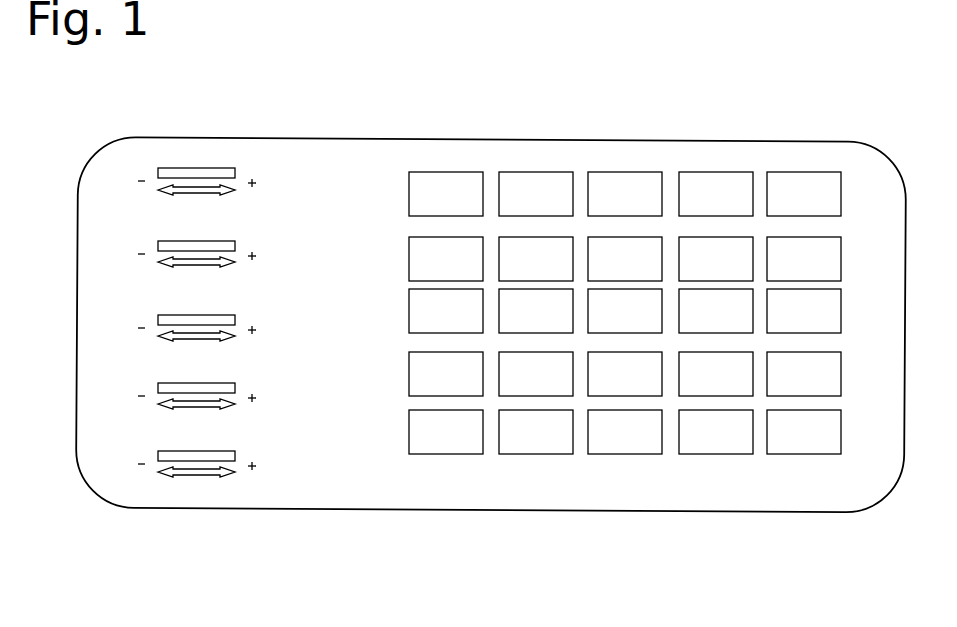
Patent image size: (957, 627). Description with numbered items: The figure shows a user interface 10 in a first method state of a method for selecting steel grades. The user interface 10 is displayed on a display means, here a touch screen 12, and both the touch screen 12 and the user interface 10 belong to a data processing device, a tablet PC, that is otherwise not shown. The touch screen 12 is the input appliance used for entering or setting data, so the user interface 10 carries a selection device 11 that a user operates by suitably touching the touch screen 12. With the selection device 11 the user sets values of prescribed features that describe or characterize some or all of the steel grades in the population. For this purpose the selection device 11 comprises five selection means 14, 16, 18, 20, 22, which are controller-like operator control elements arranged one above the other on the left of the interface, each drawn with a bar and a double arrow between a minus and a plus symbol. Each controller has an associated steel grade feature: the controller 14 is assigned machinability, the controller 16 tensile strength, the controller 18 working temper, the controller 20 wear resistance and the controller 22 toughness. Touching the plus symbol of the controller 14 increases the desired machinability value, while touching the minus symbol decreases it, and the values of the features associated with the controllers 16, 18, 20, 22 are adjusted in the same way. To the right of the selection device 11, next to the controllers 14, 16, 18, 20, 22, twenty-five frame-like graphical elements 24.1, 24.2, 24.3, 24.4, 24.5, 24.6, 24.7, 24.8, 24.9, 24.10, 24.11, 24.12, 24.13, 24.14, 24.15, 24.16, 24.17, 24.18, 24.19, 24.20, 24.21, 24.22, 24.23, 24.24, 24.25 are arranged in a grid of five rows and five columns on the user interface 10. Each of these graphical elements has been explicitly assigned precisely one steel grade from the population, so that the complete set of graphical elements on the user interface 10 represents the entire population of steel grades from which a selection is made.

The user interface 10 is at (280, 522).
The selection device 11 is at (226, 154).
The touch screen 12 is at (402, 527).
The selection means 14 is at (239, 128).
The selection means 16 is at (237, 262).
The selection means 18 is at (237, 336).
The selection means 20 is at (237, 404).
The selection means 22 is at (237, 472).
The graphical element 24.1 is at (469, 206).
The graphical element 24.2 is at (559, 206).
The graphical element 24.3 is at (648, 206).
The graphical element 24.4 is at (739, 206).
The graphical element 24.5 is at (827, 206).
The graphical element 24.6 is at (469, 272).
The graphical element 24.7 is at (559, 272).
The graphical element 24.8 is at (648, 272).
The graphical element 24.9 is at (739, 272).
The graphical element 24.10 is at (835, 272).
The graphical element 24.11 is at (477, 324).
The graphical element 24.12 is at (567, 324).
The graphical element 24.13 is at (656, 324).
The graphical element 24.14 is at (747, 324).
The graphical element 24.15 is at (835, 324).
The graphical element 24.16 is at (477, 386).
The graphical element 24.17 is at (567, 386).
The graphical element 24.18 is at (656, 386).
The graphical element 24.19 is at (747, 386).
The graphical element 24.20 is at (835, 386).
The graphical element 24.21 is at (477, 444).
The graphical element 24.22 is at (567, 444).
The graphical element 24.23 is at (656, 444).
The graphical element 24.24 is at (747, 444).
The graphical element 24.25 is at (835, 444).